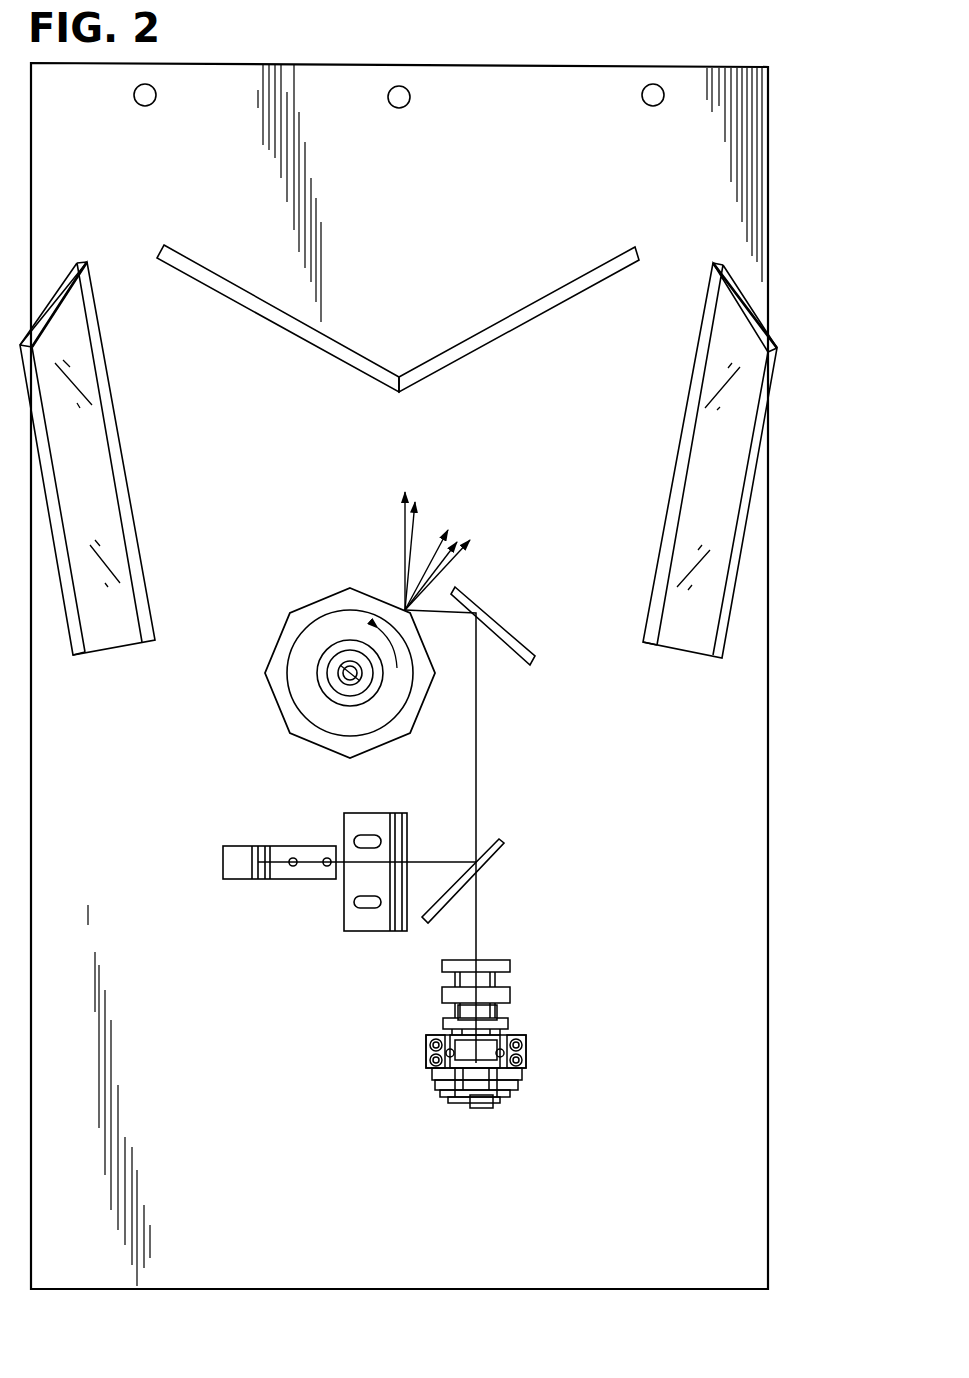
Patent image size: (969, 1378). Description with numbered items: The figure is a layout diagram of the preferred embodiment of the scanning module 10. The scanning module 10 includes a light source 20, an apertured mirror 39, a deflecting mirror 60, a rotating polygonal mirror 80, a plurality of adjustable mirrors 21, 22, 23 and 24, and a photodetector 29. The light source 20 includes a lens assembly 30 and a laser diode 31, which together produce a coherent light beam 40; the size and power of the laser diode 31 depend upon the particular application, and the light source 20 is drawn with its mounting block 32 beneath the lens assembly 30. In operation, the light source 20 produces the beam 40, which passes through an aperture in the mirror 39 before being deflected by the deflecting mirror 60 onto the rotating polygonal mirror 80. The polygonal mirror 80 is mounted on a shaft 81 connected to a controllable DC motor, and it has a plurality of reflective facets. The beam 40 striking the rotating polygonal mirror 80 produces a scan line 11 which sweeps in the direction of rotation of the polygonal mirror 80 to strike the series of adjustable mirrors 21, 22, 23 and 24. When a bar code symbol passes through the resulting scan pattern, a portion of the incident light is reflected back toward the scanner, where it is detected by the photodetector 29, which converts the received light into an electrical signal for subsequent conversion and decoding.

The scanning module 10 is at (776, 737).
The scan line 11 is at (413, 532).
The light source 20 is at (489, 1059).
The adjustable mirror 21 is at (133, 500).
The adjustable mirror 22 is at (237, 285).
The adjustable mirror 23 is at (556, 291).
The adjustable mirror 24 is at (743, 437).
The photodetector 29 is at (252, 880).
The lens assembly 30 is at (441, 1007).
The laser diode 31 is at (491, 1094).
The laser mounting block 32 is at (510, 1025).
The apertured mirror 39 is at (500, 852).
The coherent light beam 40 is at (479, 735).
The deflecting mirror 60 is at (535, 648).
The rotating polygonal mirror 80 is at (270, 703).
The shaft 81 is at (345, 670).